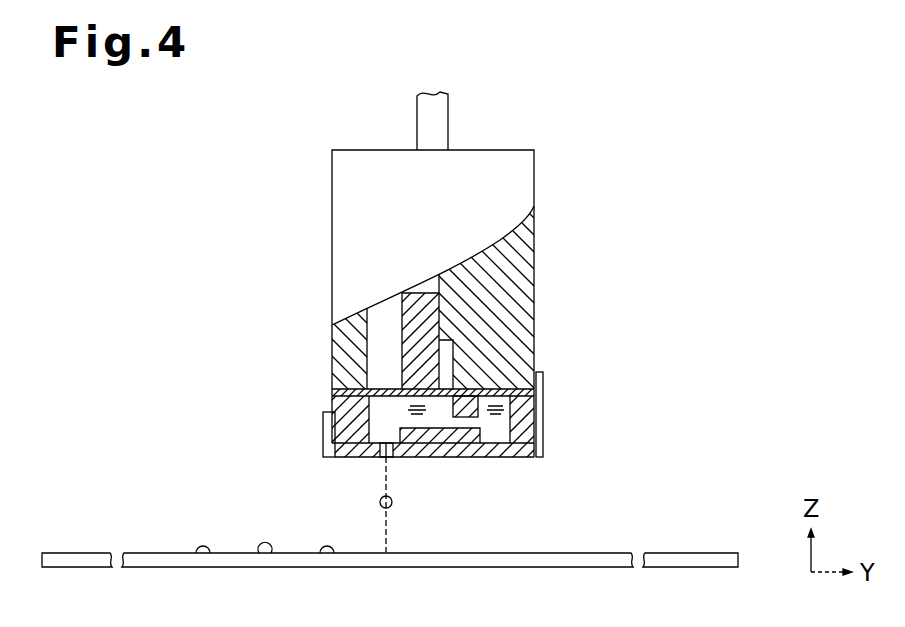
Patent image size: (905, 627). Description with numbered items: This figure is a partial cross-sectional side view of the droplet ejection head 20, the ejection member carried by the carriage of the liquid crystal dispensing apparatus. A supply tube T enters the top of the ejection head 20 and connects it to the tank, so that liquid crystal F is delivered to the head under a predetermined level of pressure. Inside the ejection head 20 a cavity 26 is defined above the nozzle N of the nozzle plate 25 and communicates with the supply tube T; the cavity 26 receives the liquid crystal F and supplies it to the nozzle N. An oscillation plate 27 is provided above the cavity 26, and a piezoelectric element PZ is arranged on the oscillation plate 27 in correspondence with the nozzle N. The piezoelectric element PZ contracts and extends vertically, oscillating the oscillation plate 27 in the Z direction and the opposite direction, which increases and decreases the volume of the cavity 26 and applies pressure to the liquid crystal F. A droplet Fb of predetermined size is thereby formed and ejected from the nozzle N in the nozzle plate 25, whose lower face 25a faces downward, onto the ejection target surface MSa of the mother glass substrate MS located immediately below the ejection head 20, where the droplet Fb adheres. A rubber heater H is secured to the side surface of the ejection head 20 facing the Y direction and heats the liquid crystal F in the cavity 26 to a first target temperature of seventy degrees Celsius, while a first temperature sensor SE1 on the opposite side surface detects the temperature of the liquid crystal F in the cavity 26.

The droplet ejection head 20 is at (304, 251).
The supply tube T is at (448, 118).
The piezoelectric element PZ is at (412, 343).
The oscillation plate 27 is at (378, 389).
The rubber heater H is at (543, 381).
The first temperature sensor SE1 is at (323, 432).
The cavity 26 is at (400, 424).
The liquid crystal F is at (428, 414).
The nozzle surface 25a is at (492, 457).
The nozzle plate 25 is at (520, 457).
The nozzle N is at (384, 458).
The droplet Fb is at (392, 502).
The mother glass substrate MS is at (173, 554).
The ejection target surface MSa is at (243, 553).